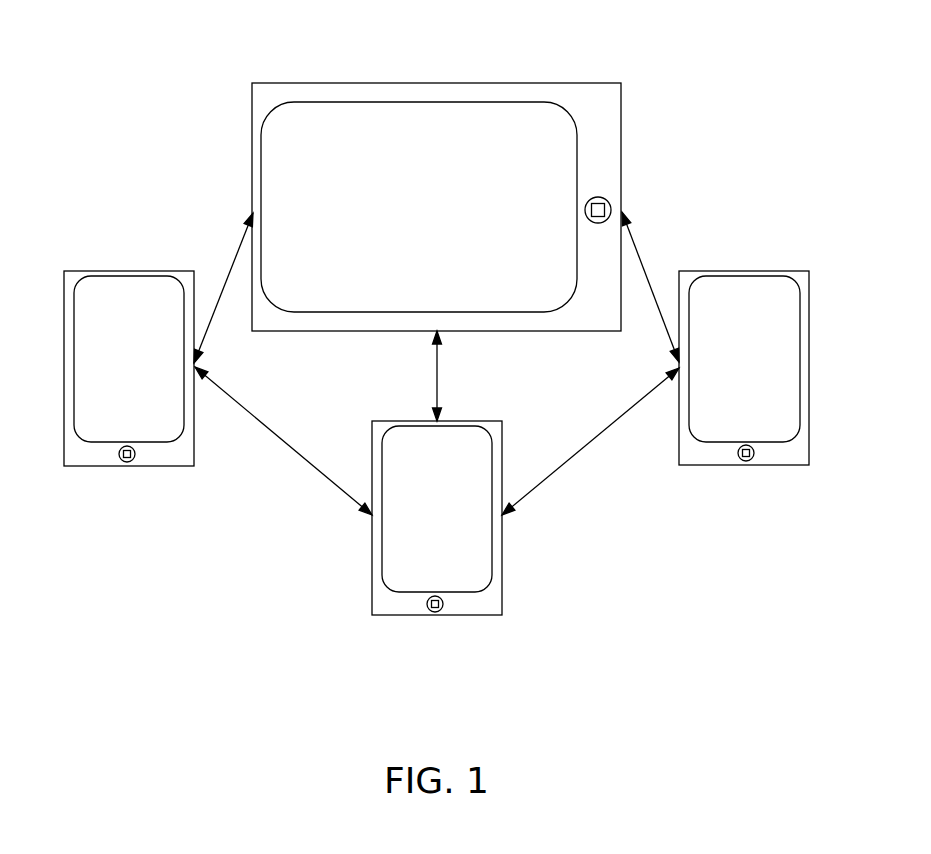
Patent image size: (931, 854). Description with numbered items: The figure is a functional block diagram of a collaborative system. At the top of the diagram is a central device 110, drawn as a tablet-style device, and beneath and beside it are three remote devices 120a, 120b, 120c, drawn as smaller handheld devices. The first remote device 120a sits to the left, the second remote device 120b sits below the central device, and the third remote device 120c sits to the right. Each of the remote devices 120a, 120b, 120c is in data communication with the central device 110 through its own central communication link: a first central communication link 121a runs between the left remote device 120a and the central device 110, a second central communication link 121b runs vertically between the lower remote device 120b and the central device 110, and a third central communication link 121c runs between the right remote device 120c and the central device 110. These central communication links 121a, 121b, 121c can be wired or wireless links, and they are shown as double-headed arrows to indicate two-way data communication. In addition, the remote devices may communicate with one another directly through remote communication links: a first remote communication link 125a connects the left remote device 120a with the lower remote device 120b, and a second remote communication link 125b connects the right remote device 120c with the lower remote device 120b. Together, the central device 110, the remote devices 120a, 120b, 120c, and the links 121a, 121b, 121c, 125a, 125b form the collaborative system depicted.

The central device 110 is at (270, 83).
The remote device 120a is at (87, 271).
The remote device 120b is at (372, 435).
The remote device 120c is at (797, 271).
The central communication link 121a is at (232, 262).
The central communication link 121b is at (438, 368).
The central communication link 121c is at (641, 258).
The remote communication link 125a is at (269, 435).
The remote communication link 125b is at (580, 455).